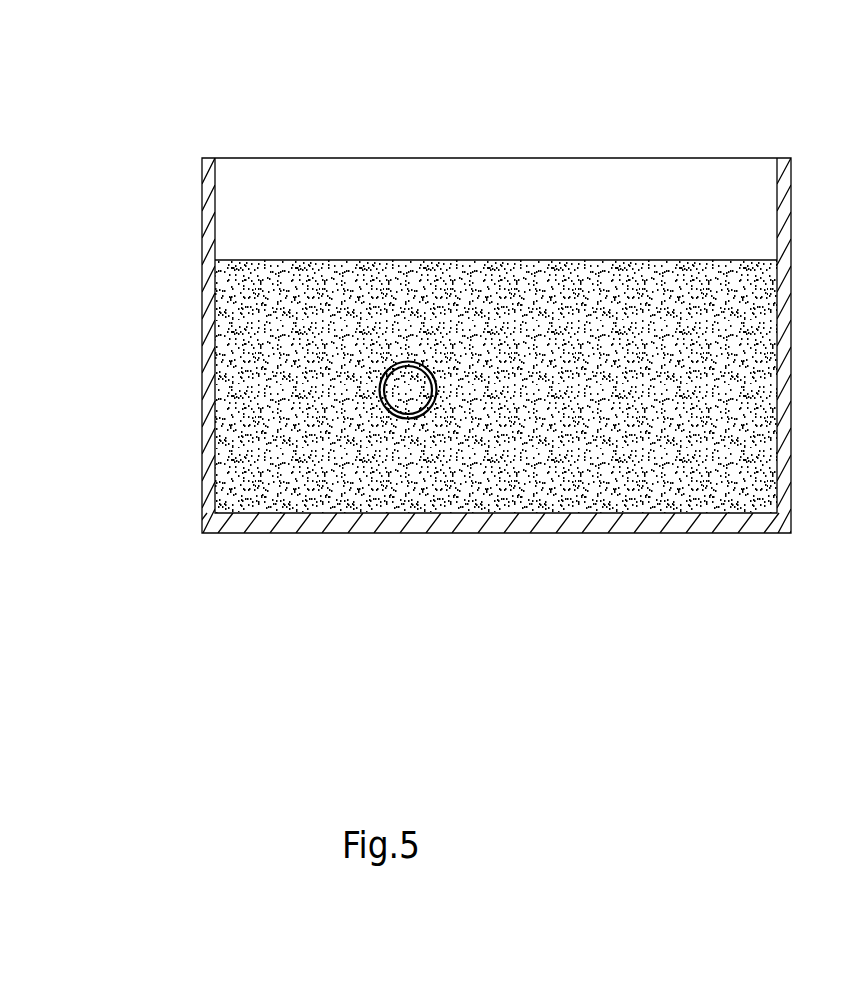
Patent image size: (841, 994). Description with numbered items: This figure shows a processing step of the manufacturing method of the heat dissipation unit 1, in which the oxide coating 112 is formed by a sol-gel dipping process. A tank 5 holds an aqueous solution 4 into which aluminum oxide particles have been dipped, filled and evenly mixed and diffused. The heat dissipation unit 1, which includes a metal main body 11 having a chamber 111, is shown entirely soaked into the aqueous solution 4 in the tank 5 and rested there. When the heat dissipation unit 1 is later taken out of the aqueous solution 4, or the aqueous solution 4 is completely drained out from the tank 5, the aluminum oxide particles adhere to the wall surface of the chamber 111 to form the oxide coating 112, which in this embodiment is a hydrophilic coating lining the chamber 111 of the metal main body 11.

The heat dissipation unit 1 is at (481, 224).
The metal main body 11 is at (481, 224).
The chamber 111 is at (395, 373).
The oxide coating 112 is at (423, 356).
The aqueous solution 4 is at (217, 258).
The tank 5 is at (207, 213).